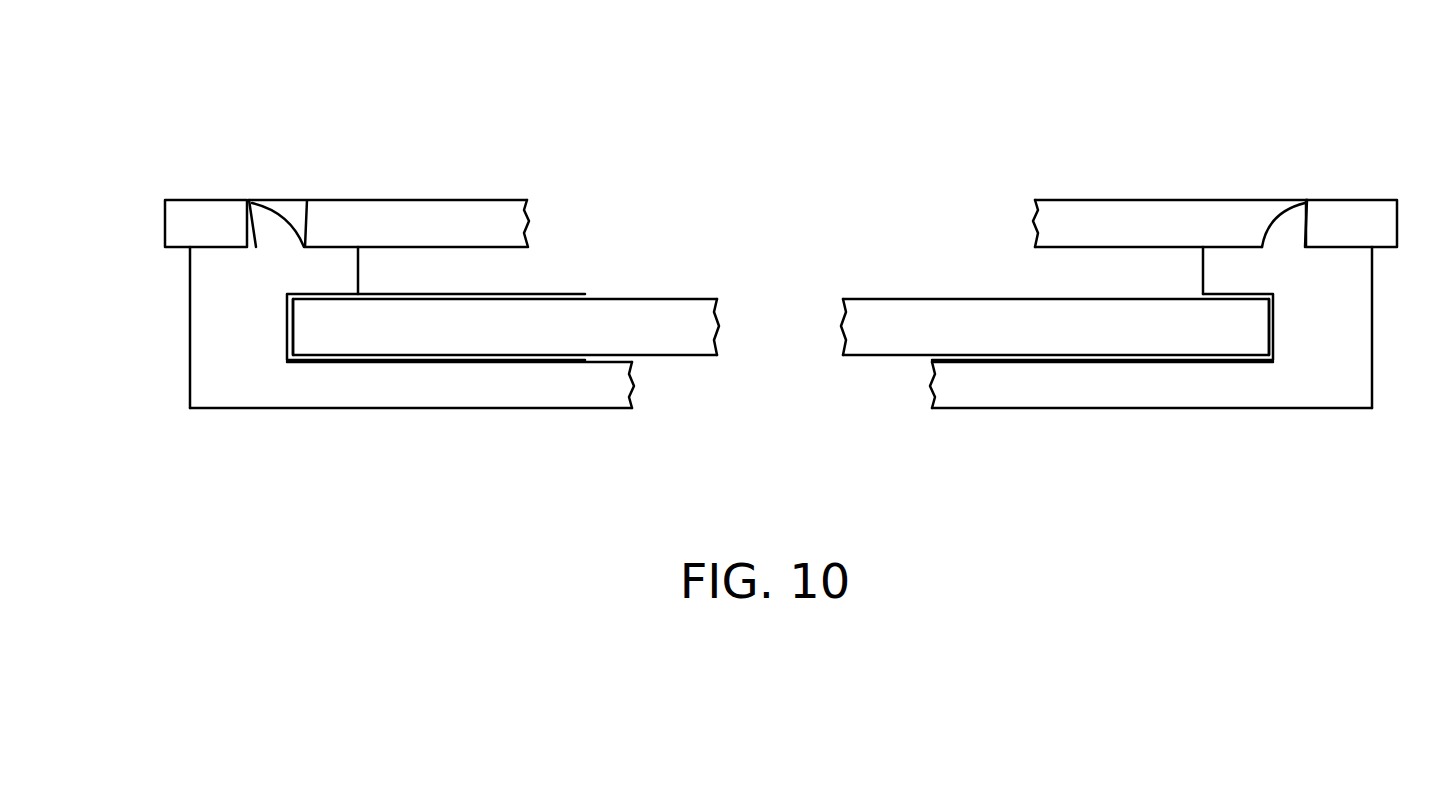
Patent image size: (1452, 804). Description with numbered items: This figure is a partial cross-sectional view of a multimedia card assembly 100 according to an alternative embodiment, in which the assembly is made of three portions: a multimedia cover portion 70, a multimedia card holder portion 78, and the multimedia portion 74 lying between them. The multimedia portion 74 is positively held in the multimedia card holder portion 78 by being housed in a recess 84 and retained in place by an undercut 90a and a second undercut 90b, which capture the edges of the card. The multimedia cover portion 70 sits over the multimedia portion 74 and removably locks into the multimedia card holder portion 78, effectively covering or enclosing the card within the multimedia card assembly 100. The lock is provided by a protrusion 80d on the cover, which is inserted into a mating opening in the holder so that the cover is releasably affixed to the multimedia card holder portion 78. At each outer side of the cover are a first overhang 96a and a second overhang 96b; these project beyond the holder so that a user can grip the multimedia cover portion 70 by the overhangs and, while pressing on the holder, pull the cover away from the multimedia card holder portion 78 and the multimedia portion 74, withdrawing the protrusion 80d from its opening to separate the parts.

The multimedia card assembly 100 is at (817, 92).
The multimedia cover portion 70 is at (208, 200).
The protrusion 80d is at (280, 210).
The multimedia portion 74 is at (672, 298).
The recess 84 is at (582, 356).
The multimedia card holder portion 78 is at (485, 410).
The first overhang 96a is at (178, 250).
The second overhang 96b is at (1383, 248).
The undercut 90a is at (294, 330).
The undercut 90b is at (1270, 328).